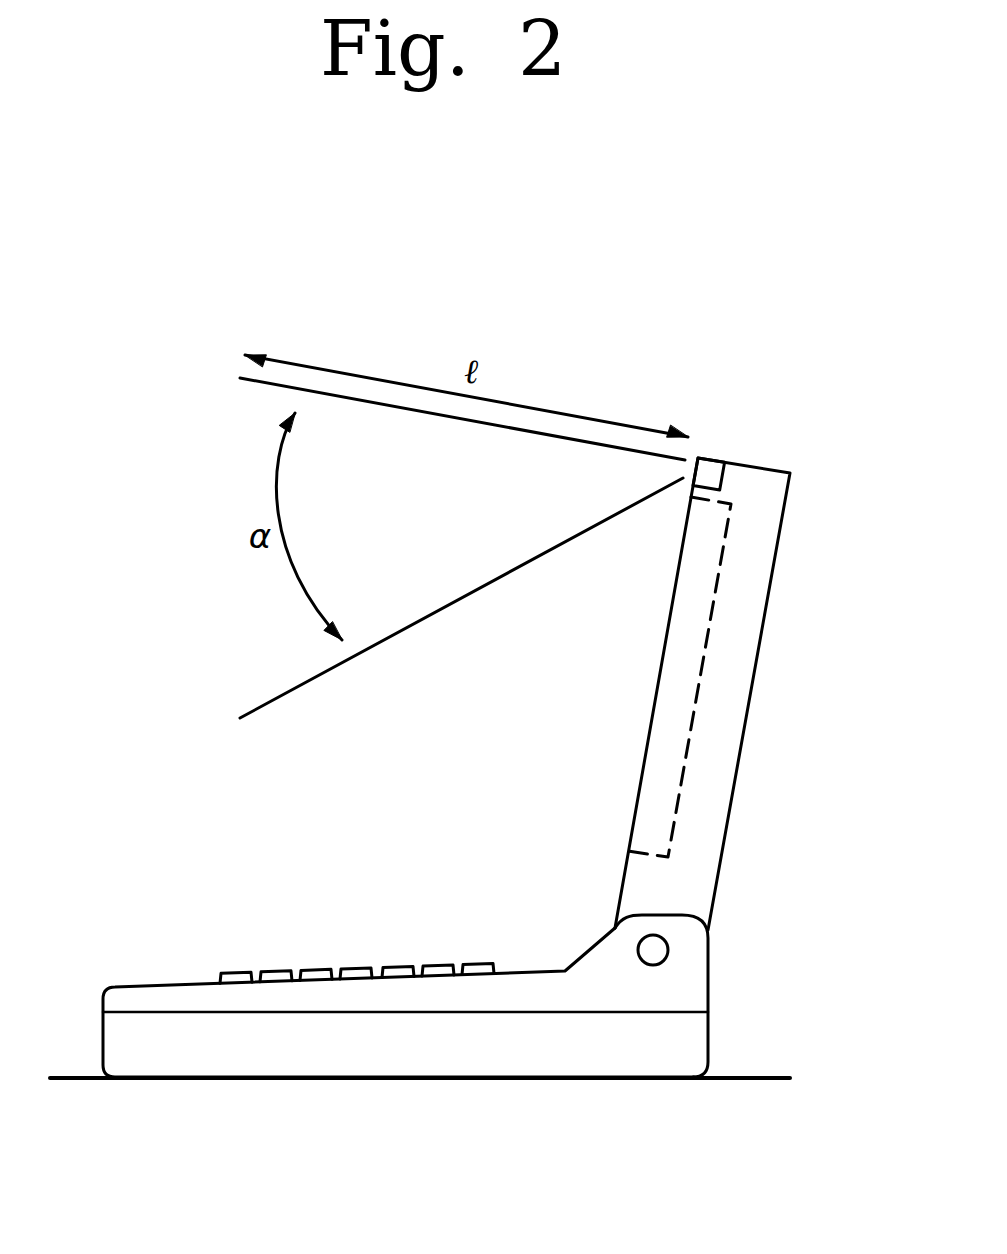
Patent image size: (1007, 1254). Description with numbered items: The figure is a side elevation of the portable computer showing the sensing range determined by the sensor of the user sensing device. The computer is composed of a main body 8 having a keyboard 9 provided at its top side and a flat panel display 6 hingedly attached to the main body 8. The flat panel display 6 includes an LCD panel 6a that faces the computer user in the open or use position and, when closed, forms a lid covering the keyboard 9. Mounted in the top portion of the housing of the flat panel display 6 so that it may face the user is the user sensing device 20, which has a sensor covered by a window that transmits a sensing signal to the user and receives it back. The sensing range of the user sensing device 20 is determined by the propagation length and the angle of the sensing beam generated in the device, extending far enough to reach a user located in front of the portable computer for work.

The flat panel display 6 is at (803, 496).
The LCD panel 6a is at (665, 744).
The main body 8 is at (715, 993).
The keyboard 9 is at (360, 962).
The user sensing device 20 is at (713, 458).